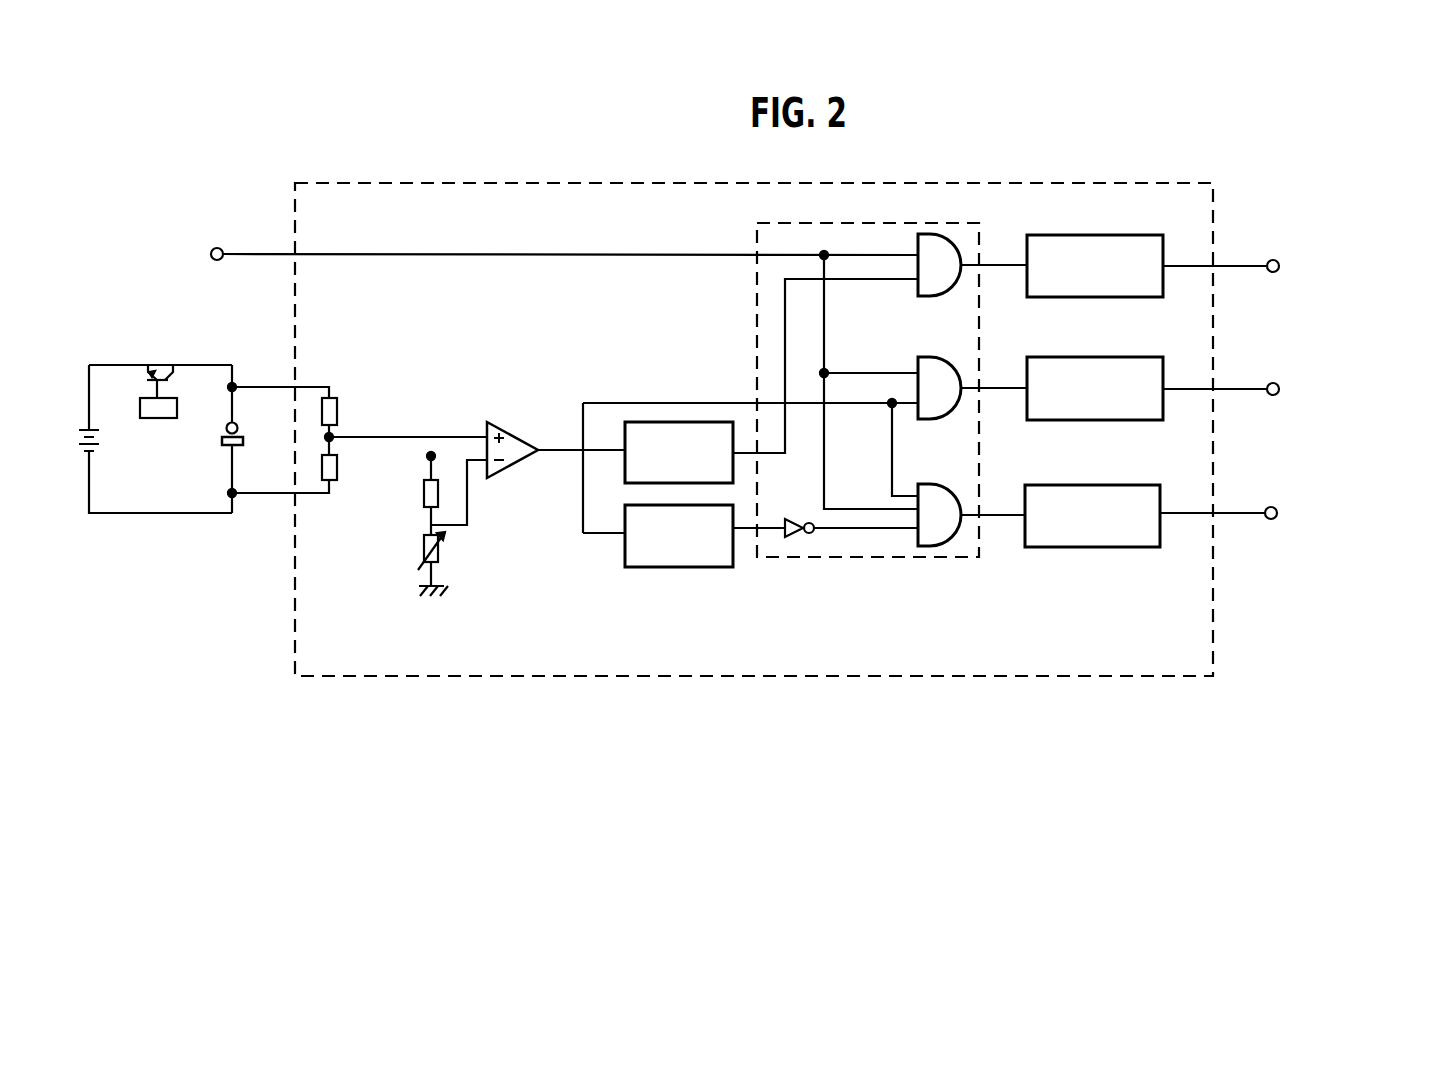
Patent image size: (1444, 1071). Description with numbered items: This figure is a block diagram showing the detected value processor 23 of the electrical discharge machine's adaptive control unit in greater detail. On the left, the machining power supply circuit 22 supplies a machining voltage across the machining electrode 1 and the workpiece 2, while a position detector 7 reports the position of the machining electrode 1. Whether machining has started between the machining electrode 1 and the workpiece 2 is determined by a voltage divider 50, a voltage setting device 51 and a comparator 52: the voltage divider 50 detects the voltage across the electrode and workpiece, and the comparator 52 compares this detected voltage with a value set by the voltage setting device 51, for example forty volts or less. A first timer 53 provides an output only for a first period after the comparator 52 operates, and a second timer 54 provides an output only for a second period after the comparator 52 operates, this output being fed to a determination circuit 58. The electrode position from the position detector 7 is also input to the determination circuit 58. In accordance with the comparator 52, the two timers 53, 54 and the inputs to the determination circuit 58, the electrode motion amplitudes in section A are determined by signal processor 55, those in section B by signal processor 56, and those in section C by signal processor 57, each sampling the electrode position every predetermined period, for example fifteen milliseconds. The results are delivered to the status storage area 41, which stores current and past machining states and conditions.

The machining electrode 1 is at (236, 426).
The workpiece 2 is at (245, 440).
The position detector 7 is at (211, 252).
The machining power supply circuit 22 is at (75, 451).
The detected value processor 23 is at (1155, 677).
The status storage area 41 is at (1291, 419).
The voltage divider 50 is at (359, 418).
The voltage setting device 51 is at (418, 516).
The comparator 52 is at (525, 465).
The first timer 53 is at (668, 422).
The second timer 54 is at (697, 567).
The signal processor 55 is at (1080, 235).
The signal processor 56 is at (1080, 357).
The signal processor 57 is at (1080, 485).
The determination circuit 58 is at (879, 559).